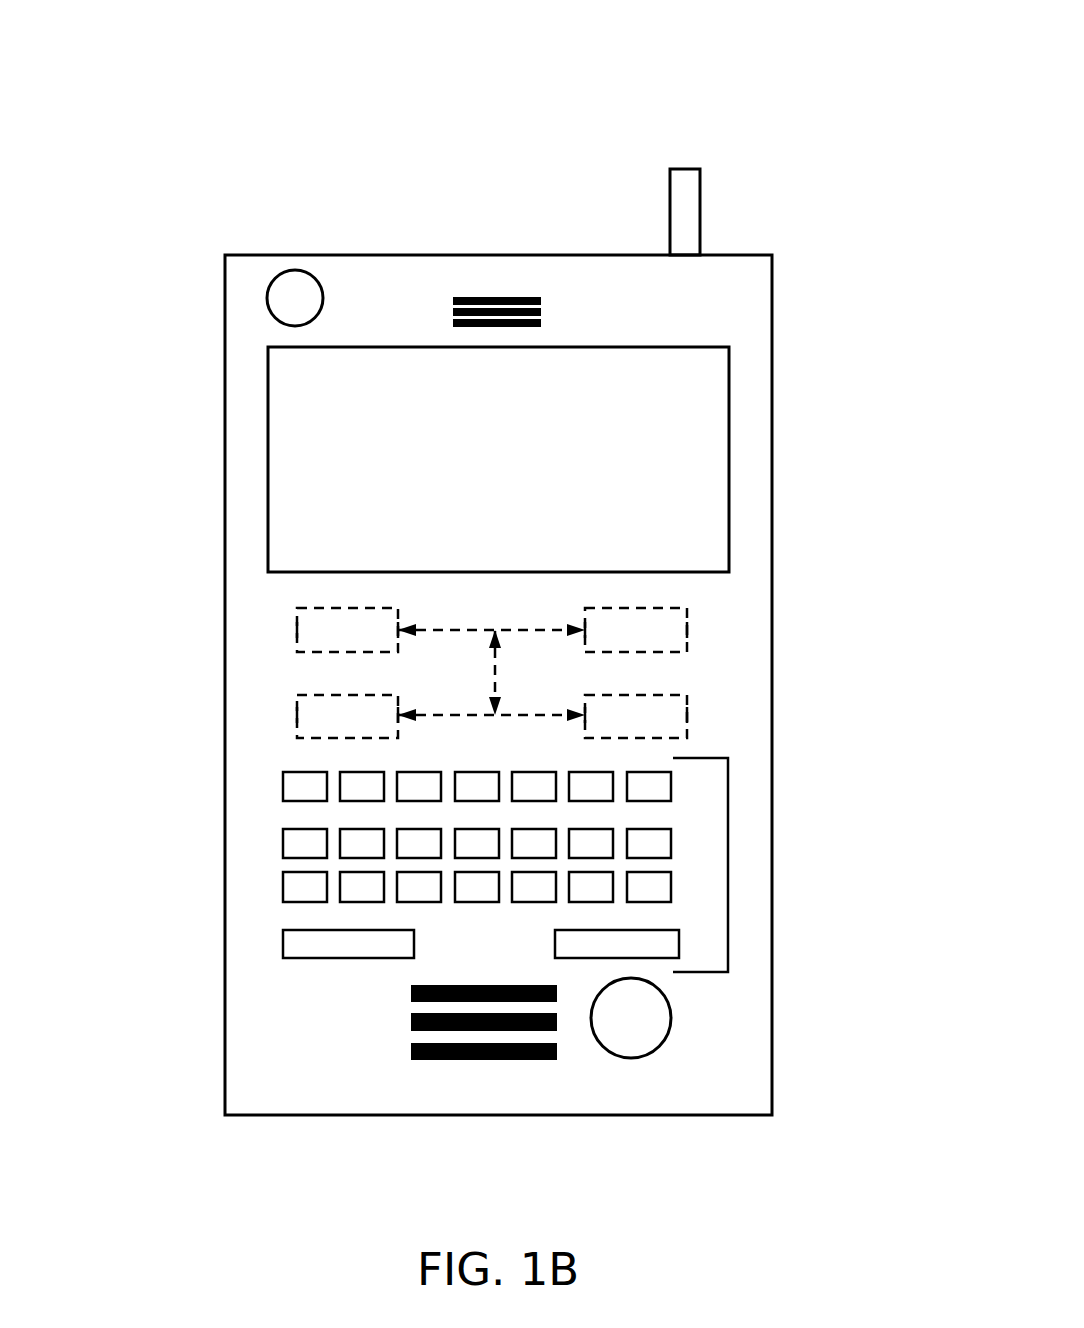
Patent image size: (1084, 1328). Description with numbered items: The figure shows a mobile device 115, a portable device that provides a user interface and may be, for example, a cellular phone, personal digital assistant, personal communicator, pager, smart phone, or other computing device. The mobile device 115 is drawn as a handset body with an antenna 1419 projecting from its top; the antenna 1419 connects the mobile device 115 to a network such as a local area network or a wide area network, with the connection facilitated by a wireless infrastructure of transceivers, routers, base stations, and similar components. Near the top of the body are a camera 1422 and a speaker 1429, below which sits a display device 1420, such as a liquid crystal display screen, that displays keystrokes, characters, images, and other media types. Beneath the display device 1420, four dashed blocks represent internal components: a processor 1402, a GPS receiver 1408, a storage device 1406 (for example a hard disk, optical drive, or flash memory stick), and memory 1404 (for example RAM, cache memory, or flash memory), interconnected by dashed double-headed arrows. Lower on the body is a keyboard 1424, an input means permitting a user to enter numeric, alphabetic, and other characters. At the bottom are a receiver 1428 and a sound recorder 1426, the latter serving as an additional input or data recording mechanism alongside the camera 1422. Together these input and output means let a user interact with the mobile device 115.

The mobile device 115 is at (570, 110).
The antenna 1419 is at (687, 211).
The camera 1422 is at (265, 293).
The speaker 1429 is at (495, 290).
The display device 1420 is at (703, 495).
The processor 1402 is at (295, 627).
The GPS receiver 1408 is at (689, 627).
The storage device 1406 is at (295, 714).
The memory 1404 is at (689, 714).
The keyboard 1424 is at (730, 857).
The sound recorder 1426 is at (635, 1017).
The receiver 1428 is at (482, 1063).